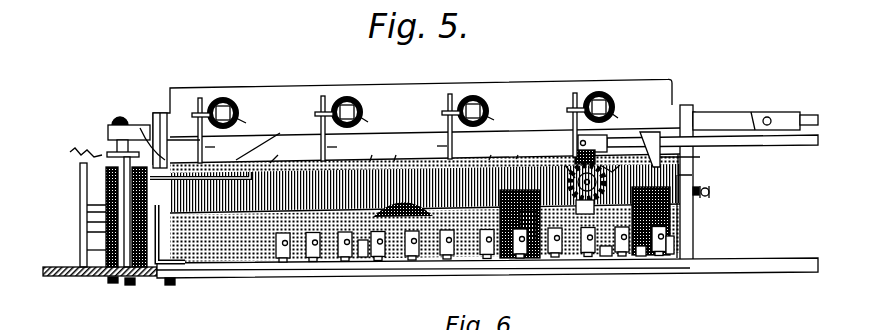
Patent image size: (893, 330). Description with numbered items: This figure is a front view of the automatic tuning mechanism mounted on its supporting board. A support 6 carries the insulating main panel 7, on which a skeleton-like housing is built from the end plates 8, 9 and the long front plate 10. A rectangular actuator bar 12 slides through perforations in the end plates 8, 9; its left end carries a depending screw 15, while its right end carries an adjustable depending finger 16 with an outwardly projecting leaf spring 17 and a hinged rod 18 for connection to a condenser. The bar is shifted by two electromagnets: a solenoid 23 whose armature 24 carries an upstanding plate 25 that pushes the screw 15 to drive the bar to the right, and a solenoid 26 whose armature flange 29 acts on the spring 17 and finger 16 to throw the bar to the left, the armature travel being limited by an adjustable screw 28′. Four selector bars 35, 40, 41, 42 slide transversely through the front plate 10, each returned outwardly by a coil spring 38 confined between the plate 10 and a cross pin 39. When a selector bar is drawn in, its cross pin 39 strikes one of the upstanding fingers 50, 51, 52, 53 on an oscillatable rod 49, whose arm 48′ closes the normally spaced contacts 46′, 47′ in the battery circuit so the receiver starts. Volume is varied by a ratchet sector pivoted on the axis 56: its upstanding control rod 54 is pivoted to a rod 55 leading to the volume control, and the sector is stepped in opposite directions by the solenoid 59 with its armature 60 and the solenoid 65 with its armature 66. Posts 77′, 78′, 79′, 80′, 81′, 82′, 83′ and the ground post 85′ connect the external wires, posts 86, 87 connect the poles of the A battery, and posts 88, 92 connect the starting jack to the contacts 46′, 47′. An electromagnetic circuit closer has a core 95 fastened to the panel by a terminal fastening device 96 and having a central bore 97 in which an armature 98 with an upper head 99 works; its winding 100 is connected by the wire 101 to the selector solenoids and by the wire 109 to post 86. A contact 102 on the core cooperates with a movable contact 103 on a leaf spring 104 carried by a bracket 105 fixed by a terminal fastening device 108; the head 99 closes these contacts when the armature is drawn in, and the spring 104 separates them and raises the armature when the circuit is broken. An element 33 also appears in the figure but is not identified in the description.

The support 6 is at (588, 256).
The main panel 7 is at (412, 259).
The end plate 8 is at (156, 113).
The end plate 9 is at (690, 105).
The front plate 10 is at (416, 170).
The actuator bar 12 is at (740, 112).
The screw 15 is at (116, 118).
The finger 16 is at (652, 150).
The leaf spring 17 is at (692, 156).
The hinged rod 18 is at (808, 115).
The solenoid 23 is at (278, 150).
The armature 24 is at (87, 228).
The upstanding plate 25 is at (84, 192).
The solenoid 26 is at (489, 149).
The screw 28′ is at (710, 193).
The upstanding flange 29 is at (692, 172).
The gear 33 is at (585, 207).
The selector bar 35 is at (224, 100).
The coil spring 38 is at (436, 123).
The cross pin 39 is at (572, 110).
The selector bar 40 is at (348, 99).
The selector bar 41 is at (474, 98).
The selector bar 42 is at (600, 94).
The contact 46′ is at (376, 150).
The contact 47′ is at (398, 150).
The arm 48′ is at (378, 260).
The oscillatable rod 49 is at (232, 271).
The upstanding finger 50 is at (220, 150).
The upstanding finger 51 is at (341, 148).
The upstanding finger 52 is at (430, 148).
The upstanding finger 53 is at (578, 138).
The control rod 54 is at (578, 156).
The rod 55 is at (792, 146).
The pivotal axis 56 is at (592, 182).
The solenoid 59 is at (512, 258).
The armature 60 is at (519, 149).
The solenoid 65 is at (640, 256).
The armature 66 is at (670, 210).
The post 77′ is at (362, 261).
The post 78′ is at (345, 261).
The post 79′ is at (313, 261).
The post 80′ is at (283, 262).
The post 81′ is at (447, 259).
The post 82′ is at (647, 258).
The post 83′ is at (668, 256).
The post 85′ is at (487, 258).
The post 86 is at (520, 258).
The post 87 is at (555, 257).
The post 88 is at (533, 258).
The post 92 is at (605, 258).
The core 95 is at (110, 280).
The fastening device 96 is at (131, 285).
The central bore 97 is at (87, 250).
The armature 98 is at (106, 177).
The upper head 99 is at (108, 152).
The winding 100 is at (86, 210).
The wire 101 is at (72, 148).
The contact 102 is at (184, 150).
The movable contact 103 is at (141, 126).
The leaf spring 104 is at (271, 139).
The bracket 105 is at (196, 266).
The fastening device 108 is at (170, 285).
The wire 109 is at (62, 278).